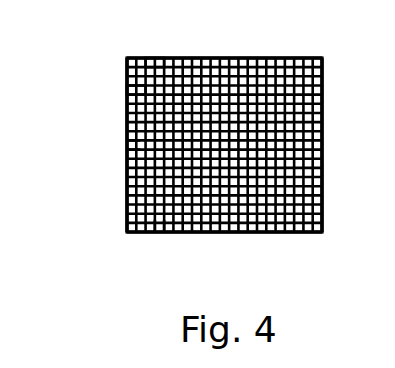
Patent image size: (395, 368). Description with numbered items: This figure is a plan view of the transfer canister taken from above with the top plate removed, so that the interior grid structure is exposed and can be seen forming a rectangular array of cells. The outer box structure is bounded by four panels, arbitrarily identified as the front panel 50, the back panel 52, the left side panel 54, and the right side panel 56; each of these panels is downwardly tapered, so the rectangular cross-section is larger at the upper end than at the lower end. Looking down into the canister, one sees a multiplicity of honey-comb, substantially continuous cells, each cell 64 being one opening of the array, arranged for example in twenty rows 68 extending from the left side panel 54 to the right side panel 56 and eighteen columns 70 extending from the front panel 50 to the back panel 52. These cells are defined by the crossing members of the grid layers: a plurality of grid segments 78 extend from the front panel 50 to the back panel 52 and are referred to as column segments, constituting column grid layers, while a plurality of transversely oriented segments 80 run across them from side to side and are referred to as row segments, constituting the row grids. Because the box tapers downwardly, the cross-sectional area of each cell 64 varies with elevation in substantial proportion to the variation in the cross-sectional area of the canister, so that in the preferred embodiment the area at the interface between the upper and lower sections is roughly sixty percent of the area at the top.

The front panel 50 is at (138, 233).
The back panel 52 is at (230, 59).
The left side panel 54 is at (127, 211).
The right side panel 56 is at (323, 159).
The cell 64 is at (293, 225).
The rows 68 is at (127, 150).
The columns 70 is at (157, 233).
The grid segments 78 is at (137, 90).
The transversely oriented segments 80 is at (158, 62).